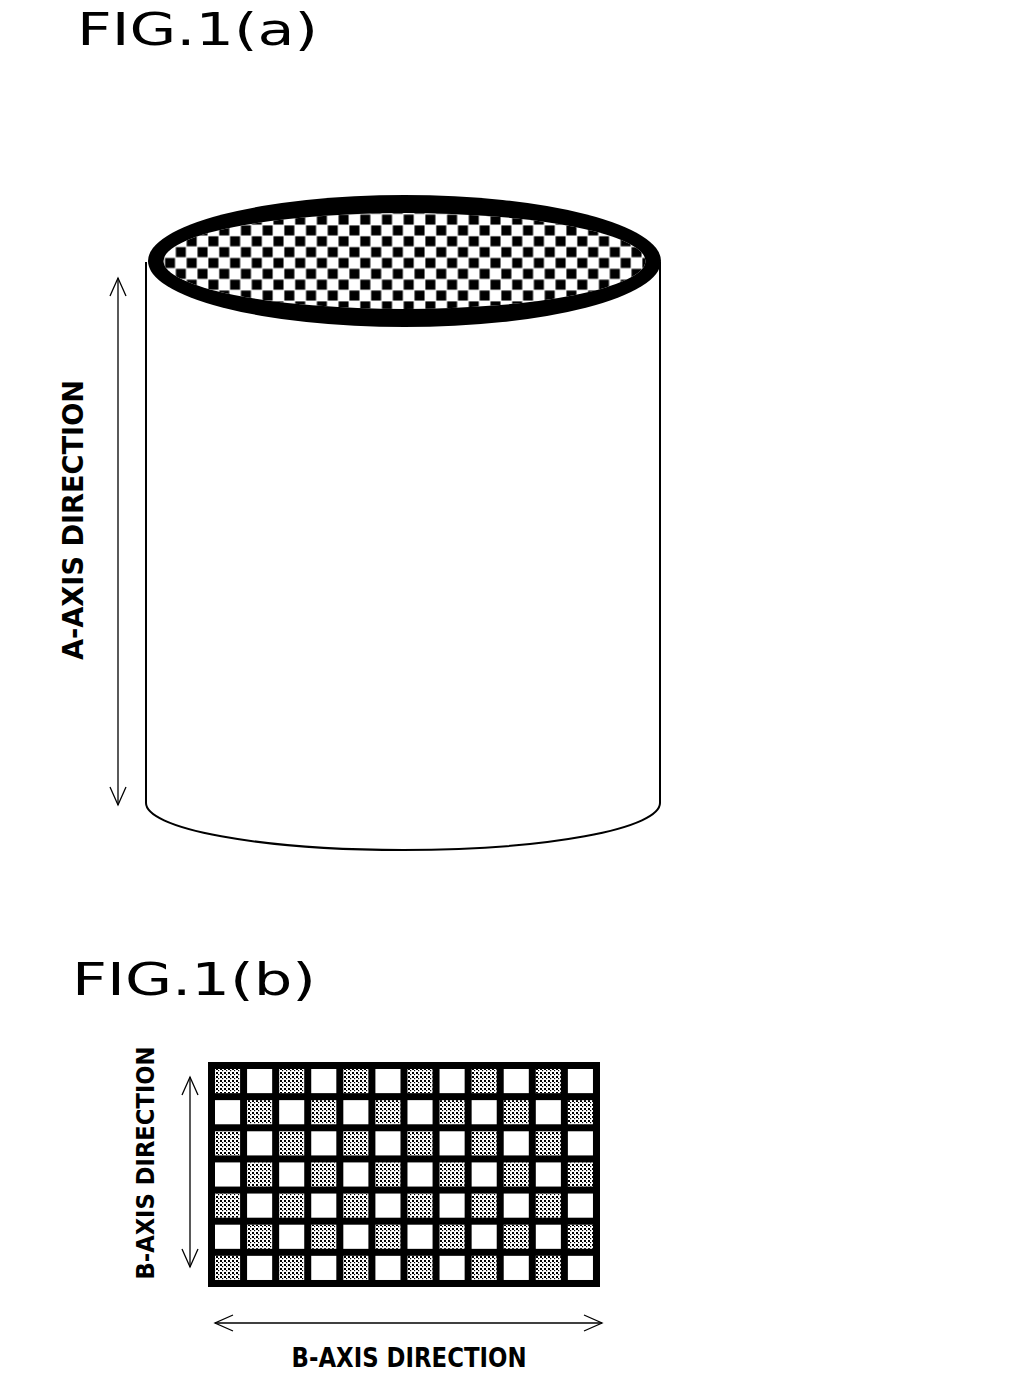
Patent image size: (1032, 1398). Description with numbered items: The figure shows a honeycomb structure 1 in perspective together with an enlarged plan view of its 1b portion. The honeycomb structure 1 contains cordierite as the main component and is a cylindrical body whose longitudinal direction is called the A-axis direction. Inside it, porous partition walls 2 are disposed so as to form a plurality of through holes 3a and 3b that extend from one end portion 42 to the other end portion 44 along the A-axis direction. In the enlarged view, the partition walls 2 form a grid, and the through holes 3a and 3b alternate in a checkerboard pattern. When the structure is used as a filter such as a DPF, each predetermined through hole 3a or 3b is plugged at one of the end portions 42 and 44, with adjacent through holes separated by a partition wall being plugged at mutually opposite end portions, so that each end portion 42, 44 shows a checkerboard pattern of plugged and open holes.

The honeycomb structure 1 is at (737, 258).
The 1b portion 1b is at (582, 212).
The end portion 42 is at (607, 302).
The end portion 44 is at (618, 832).
The partition wall 2 is at (583, 1213).
The through hole 3a is at (598, 1105).
The through hole 3b is at (577, 1147).